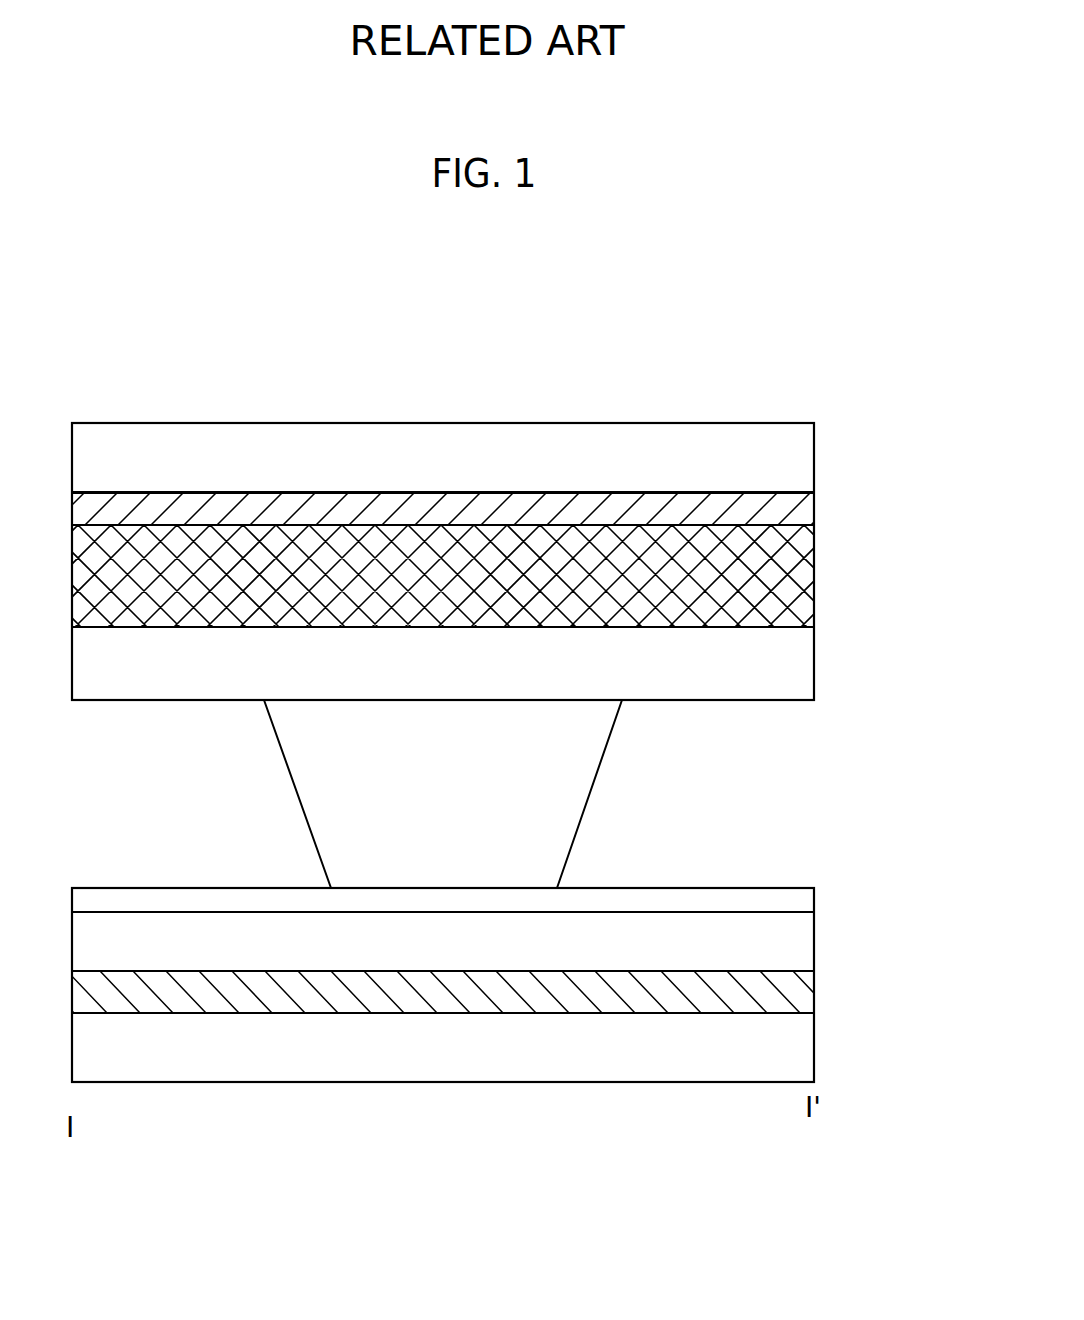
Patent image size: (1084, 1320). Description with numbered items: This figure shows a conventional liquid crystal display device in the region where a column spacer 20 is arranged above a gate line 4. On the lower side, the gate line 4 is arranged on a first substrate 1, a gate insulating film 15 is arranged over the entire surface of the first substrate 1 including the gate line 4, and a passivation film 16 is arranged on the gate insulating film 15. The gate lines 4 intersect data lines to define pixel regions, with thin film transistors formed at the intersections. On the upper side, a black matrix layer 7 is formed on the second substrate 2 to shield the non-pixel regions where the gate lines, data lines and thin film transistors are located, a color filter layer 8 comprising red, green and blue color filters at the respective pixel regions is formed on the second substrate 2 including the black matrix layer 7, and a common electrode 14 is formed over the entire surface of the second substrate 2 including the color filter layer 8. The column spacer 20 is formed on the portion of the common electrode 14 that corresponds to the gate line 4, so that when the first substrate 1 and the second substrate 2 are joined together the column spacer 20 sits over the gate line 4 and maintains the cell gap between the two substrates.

The first substrate 1 is at (802, 1047).
The gate line 4 is at (802, 993).
The gate insulating film 15 is at (802, 948).
The passivation film 16 is at (802, 902).
The column spacer 20 is at (573, 797).
The common electrode 14 is at (793, 665).
The color filter layer 8 is at (793, 595).
The black matrix layer 7 is at (793, 515).
The second substrate 2 is at (793, 462).